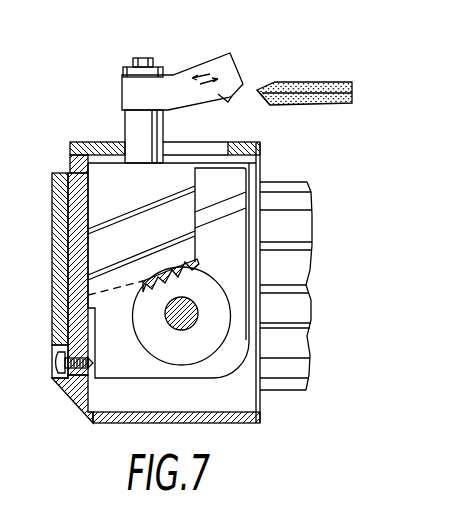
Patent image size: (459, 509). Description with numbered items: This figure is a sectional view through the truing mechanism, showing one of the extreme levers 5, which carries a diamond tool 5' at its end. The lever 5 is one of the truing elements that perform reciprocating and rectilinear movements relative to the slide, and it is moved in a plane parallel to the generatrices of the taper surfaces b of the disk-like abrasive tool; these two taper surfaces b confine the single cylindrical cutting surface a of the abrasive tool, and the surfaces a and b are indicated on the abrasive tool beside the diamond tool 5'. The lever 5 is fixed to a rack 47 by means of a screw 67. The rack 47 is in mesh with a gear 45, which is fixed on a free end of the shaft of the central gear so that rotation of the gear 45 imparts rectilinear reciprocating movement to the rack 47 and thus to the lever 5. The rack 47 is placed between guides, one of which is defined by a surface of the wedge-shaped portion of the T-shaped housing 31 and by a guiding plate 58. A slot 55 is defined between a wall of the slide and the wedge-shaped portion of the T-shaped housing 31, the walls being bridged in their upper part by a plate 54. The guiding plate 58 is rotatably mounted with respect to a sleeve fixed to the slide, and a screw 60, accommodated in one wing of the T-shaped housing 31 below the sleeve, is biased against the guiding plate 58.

The lever 5 is at (182, 68).
The diamond tool 5' is at (217, 113).
The cylindrical cutting surface a is at (258, 93).
The taper surfaces b is at (271, 80).
The T-shaped housing 31 is at (72, 387).
The gear 45 is at (142, 328).
The rack 47 is at (97, 203).
The plate 54 is at (79, 142).
The slot 55 is at (235, 396).
The guiding plate 58 is at (146, 371).
The screw 60 is at (86, 375).
The screw 67 is at (149, 59).